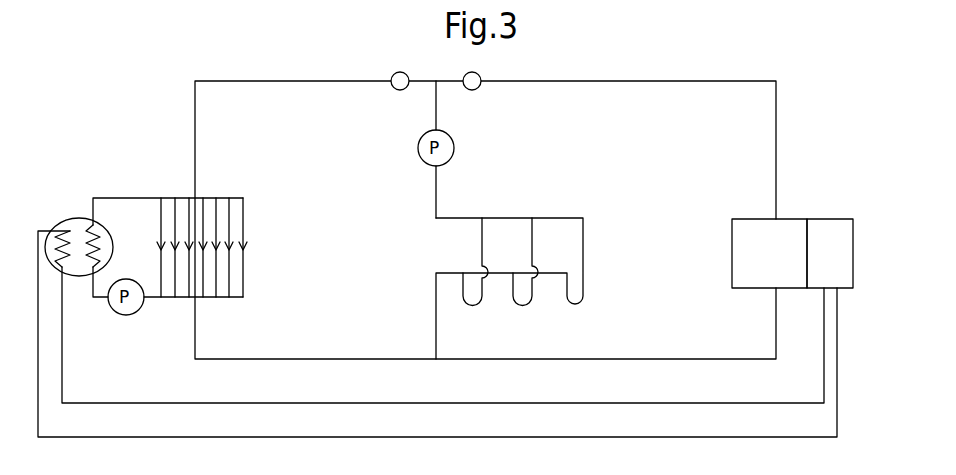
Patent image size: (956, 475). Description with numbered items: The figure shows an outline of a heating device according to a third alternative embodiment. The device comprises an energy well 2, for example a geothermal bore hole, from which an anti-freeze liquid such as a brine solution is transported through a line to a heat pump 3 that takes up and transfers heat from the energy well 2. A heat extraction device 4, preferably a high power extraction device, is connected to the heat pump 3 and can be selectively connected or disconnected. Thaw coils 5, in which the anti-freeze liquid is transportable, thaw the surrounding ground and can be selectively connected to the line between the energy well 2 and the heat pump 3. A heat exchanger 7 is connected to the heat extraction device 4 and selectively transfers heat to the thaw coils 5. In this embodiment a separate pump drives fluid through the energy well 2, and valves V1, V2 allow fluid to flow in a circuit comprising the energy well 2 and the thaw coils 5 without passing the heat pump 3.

The energy well 2 is at (548, 211).
The heat pump 3 is at (785, 227).
The heat extraction device 4 is at (826, 226).
The thaw coils 5 is at (183, 197).
The heat exchanger 7 is at (73, 218).
The valve V1 is at (387, 70).
The valve V2 is at (486, 70).